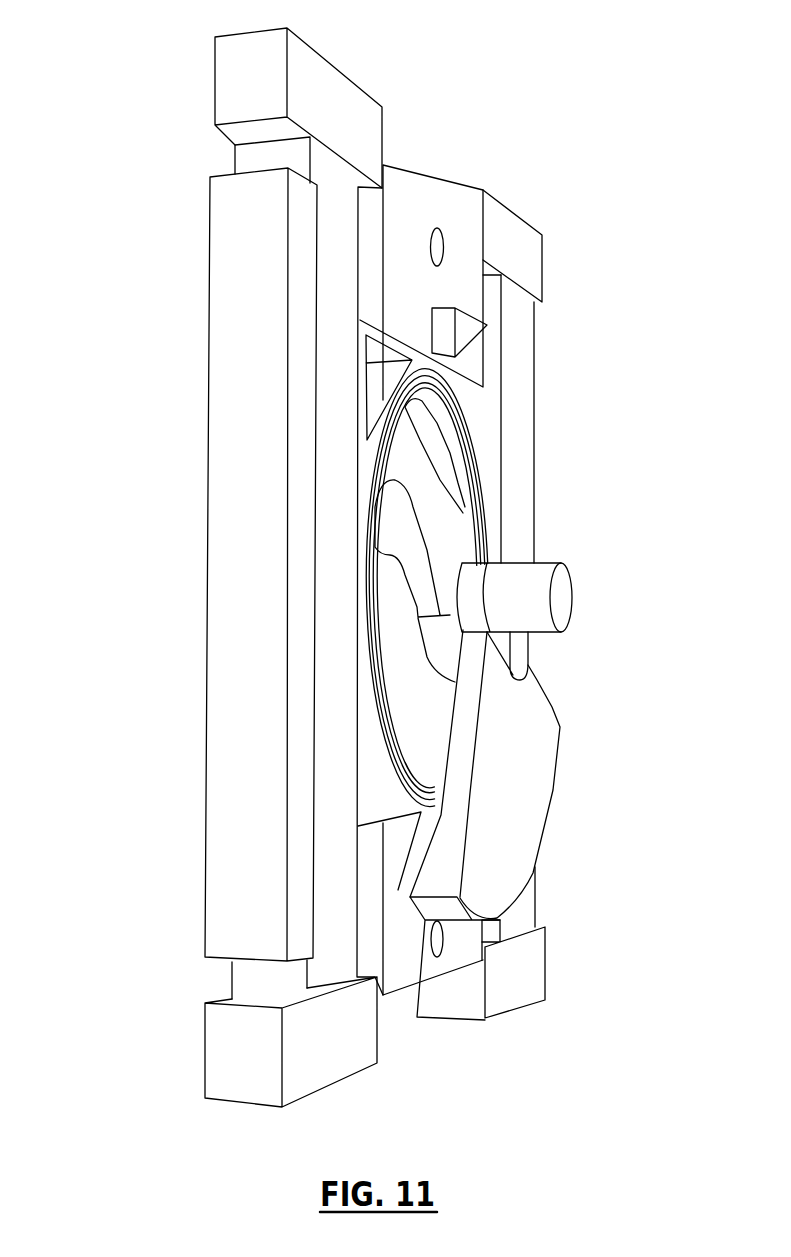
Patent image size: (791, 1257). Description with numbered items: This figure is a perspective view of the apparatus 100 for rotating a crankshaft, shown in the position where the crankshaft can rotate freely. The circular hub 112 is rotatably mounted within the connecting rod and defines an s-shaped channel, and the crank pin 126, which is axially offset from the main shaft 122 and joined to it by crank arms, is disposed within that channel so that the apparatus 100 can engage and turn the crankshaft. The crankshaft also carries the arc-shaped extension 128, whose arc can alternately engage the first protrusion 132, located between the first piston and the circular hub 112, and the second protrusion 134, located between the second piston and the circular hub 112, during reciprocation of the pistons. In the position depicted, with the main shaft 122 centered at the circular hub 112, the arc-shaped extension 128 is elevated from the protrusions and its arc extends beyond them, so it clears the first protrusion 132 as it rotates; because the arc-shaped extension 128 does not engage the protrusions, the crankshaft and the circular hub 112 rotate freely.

The apparatus 100 is at (157, 43).
The circular hub 112 is at (443, 517).
The main shaft 122 is at (535, 590).
The crank pin 126 is at (518, 643).
The arc-shaped extension 128 is at (530, 783).
The first protrusion 132 is at (466, 331).
The second protrusion 134 is at (420, 877).